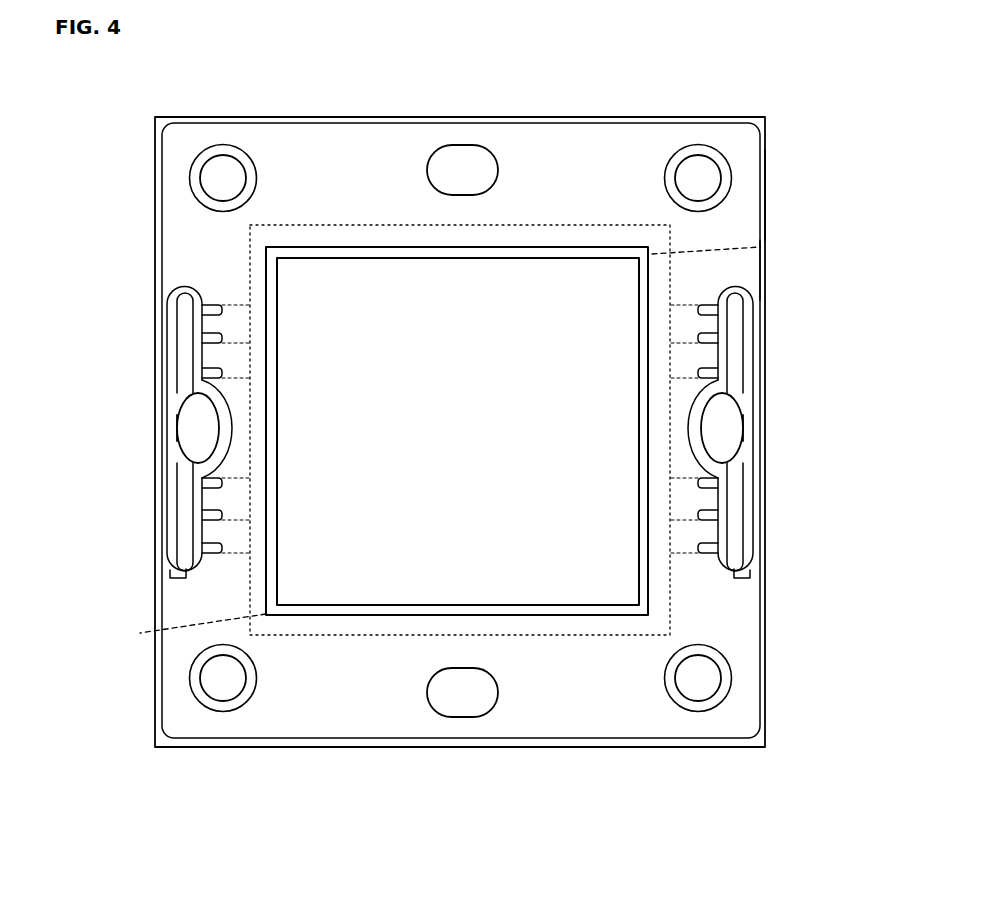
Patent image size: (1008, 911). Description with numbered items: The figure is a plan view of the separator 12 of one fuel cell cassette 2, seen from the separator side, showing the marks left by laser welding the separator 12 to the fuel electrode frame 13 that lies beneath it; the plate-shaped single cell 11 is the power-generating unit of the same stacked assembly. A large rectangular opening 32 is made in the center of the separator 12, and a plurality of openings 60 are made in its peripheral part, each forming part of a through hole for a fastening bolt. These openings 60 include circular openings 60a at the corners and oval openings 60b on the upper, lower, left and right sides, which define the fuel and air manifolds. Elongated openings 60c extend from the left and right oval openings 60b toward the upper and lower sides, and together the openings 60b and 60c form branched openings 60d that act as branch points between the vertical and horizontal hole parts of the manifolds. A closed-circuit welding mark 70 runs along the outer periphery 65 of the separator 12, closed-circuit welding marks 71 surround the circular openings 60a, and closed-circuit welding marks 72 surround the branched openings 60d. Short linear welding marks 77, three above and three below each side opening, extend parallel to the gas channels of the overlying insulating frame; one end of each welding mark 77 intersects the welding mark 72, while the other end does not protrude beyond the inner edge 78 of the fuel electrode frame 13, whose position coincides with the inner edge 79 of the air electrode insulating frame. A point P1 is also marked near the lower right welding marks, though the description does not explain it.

The fuel cell cassette 2 is at (150, 116).
The single cell 11 is at (287, 283).
The separator 12 is at (632, 133).
The fuel electrode frame 13 is at (662, 293).
The opening 32 is at (392, 252).
The openings 60 is at (716, 166).
The circular openings 60a is at (208, 174).
The oval openings 60b is at (470, 146).
The elongated openings 60c is at (184, 475).
The branched openings 60d is at (180, 424).
The outer periphery 65 is at (762, 270).
The welding mark 70 is at (766, 190).
The welding marks 71 is at (255, 170).
The welding marks 72 is at (190, 580).
The linear welding marks 77 is at (222, 338).
The inner edge 78 is at (187, 633).
The inner edge 79 is at (775, 244).
The position P1 is at (690, 562).